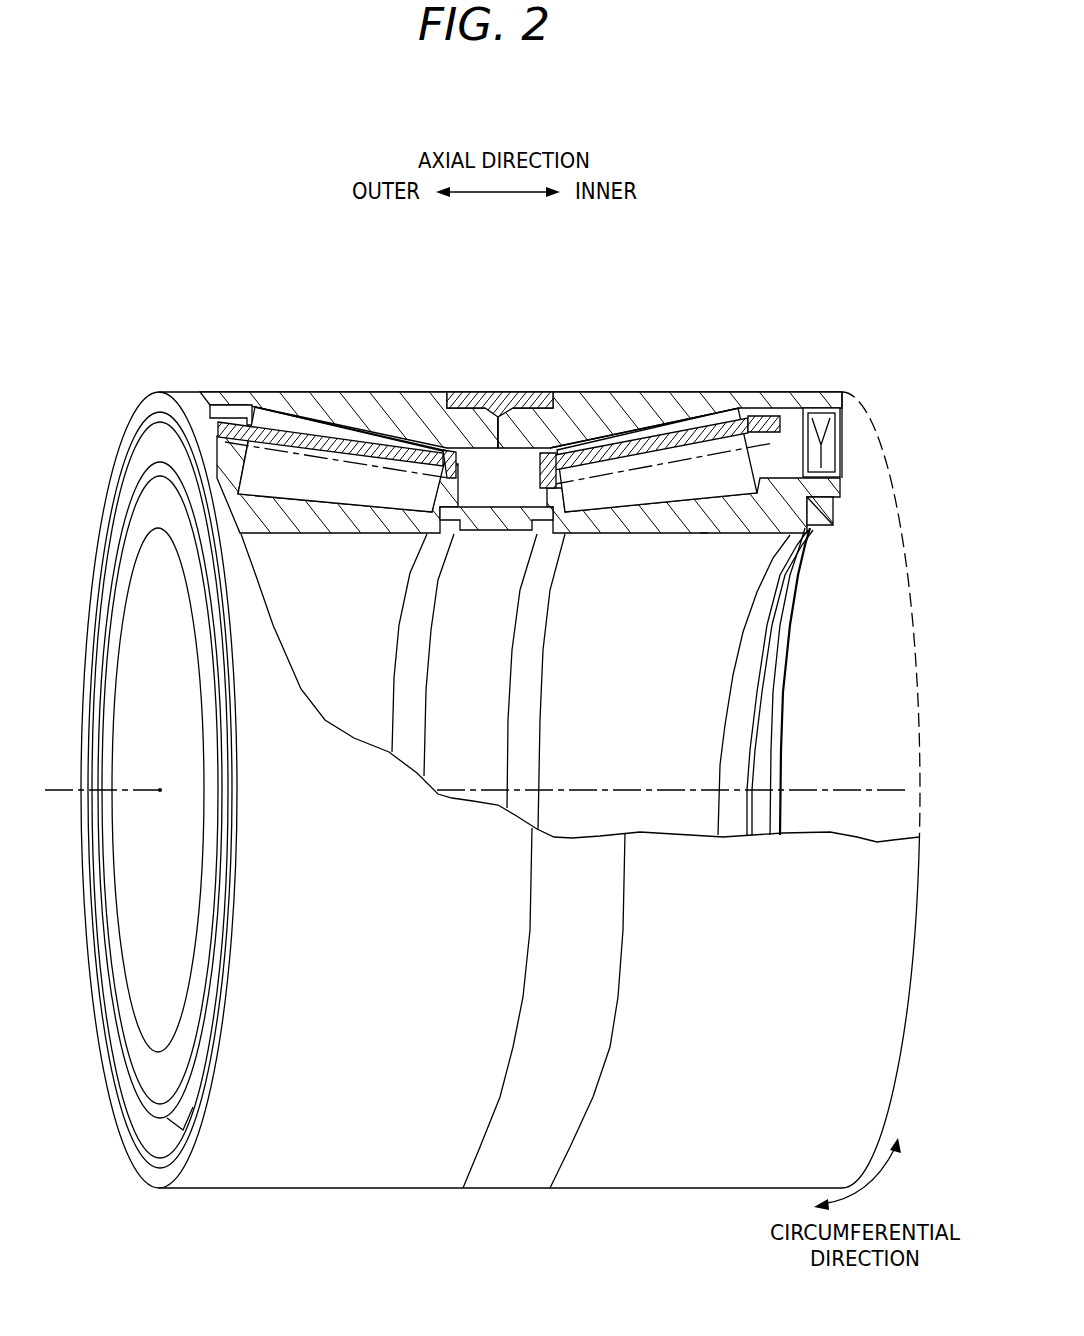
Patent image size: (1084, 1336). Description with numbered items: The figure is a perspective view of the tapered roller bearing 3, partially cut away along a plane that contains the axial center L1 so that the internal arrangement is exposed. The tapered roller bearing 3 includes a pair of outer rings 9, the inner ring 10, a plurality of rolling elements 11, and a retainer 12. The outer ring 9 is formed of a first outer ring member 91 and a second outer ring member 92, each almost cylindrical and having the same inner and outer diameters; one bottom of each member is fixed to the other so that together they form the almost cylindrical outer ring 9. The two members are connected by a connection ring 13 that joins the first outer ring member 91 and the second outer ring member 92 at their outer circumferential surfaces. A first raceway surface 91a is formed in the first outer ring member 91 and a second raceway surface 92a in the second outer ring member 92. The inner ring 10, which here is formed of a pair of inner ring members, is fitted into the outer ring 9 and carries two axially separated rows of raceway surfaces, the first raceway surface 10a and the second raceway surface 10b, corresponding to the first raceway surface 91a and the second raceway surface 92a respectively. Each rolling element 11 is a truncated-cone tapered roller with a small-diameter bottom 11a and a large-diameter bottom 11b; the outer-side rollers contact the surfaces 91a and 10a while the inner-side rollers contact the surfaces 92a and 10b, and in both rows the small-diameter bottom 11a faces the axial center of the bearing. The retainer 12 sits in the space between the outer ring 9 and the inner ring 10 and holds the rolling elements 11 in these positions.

The tapered roller bearing 3 is at (781, 282).
The outer ring 9 is at (590, 283).
The first outer ring member 91 is at (432, 392).
The second outer ring member 92 is at (576, 392).
The first raceway surface 91a is at (326, 440).
The second raceway surface 92a is at (670, 438).
The connection ring 13 is at (463, 400).
The retainer 12 is at (228, 405).
The inner ring 10 is at (390, 518).
The first raceway surface 10a is at (352, 518).
The second raceway surface 10b is at (662, 518).
The rolling element 11 is at (407, 445).
The small-diameter bottom 11a is at (548, 528).
The large-diameter bottom 11b is at (704, 534).
The axial center L1 is at (818, 790).